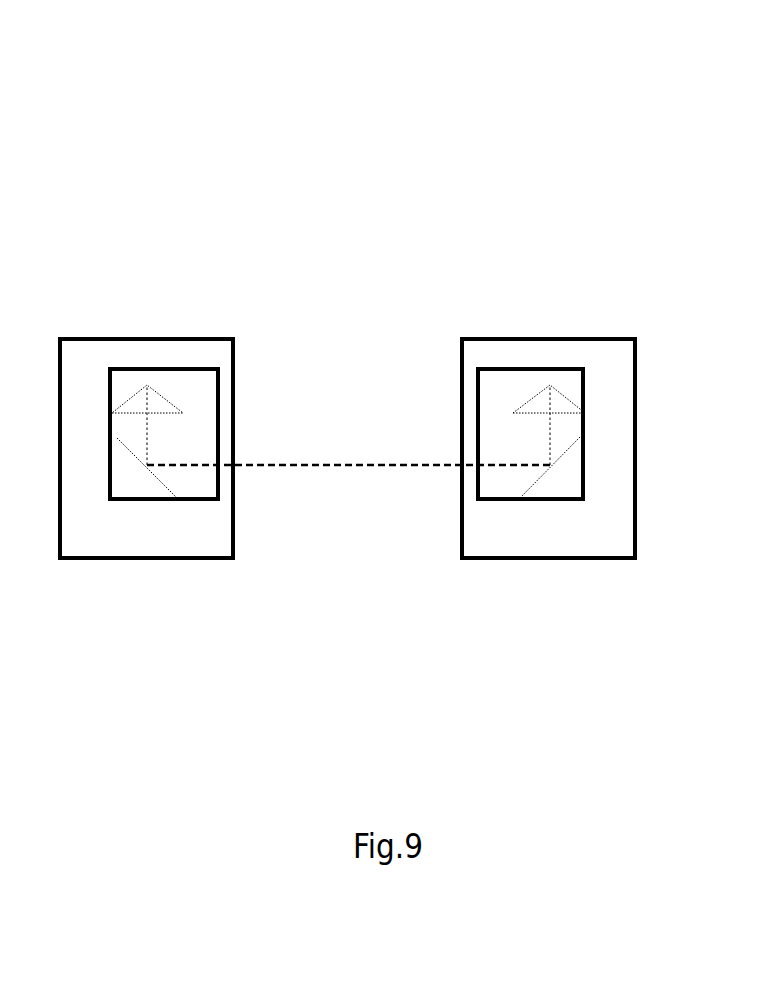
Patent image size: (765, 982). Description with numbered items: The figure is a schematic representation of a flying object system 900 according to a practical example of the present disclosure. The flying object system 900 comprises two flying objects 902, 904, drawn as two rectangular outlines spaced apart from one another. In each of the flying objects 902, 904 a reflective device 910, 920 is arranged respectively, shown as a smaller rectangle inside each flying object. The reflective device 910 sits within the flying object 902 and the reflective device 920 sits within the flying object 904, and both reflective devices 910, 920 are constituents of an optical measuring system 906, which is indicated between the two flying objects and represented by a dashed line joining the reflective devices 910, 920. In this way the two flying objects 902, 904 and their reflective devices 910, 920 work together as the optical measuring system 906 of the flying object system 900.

The flying object system 900 is at (535, 134).
The flying object 902 is at (495, 338).
The flying object 904 is at (145, 338).
The optical measuring system 906 is at (375, 338).
The reflective device 910 is at (477, 433).
The reflective device 920 is at (220, 397).